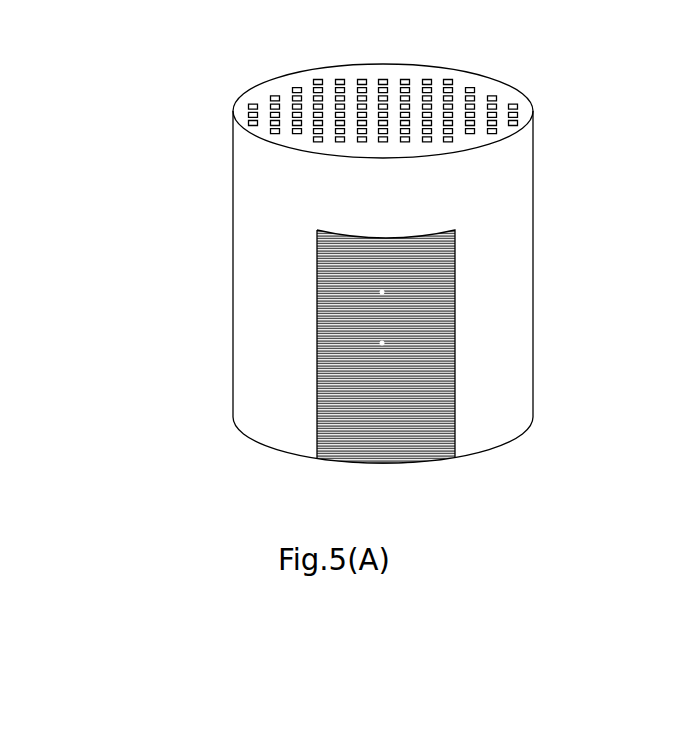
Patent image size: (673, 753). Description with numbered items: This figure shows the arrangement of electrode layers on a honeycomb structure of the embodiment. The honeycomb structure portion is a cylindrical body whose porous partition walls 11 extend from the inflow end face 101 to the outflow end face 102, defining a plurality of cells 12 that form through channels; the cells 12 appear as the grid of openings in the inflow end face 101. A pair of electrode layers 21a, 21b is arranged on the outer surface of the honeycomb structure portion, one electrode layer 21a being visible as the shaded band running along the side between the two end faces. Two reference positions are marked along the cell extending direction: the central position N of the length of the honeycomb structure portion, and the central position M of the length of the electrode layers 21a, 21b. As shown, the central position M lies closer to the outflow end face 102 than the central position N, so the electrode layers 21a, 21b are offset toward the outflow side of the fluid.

The inflow end face 101 is at (383, 93).
The outflow end face 102 is at (383, 457).
The partition wall 11 is at (460, 92).
The cell 12 is at (320, 136).
The electrode layer 21a is at (486, 347).
The electrode layer 21b is at (457, 333).
The central position of the length of the honeycomb structure portion N is at (383, 292).
The central position of the electrode layer length M is at (383, 343).